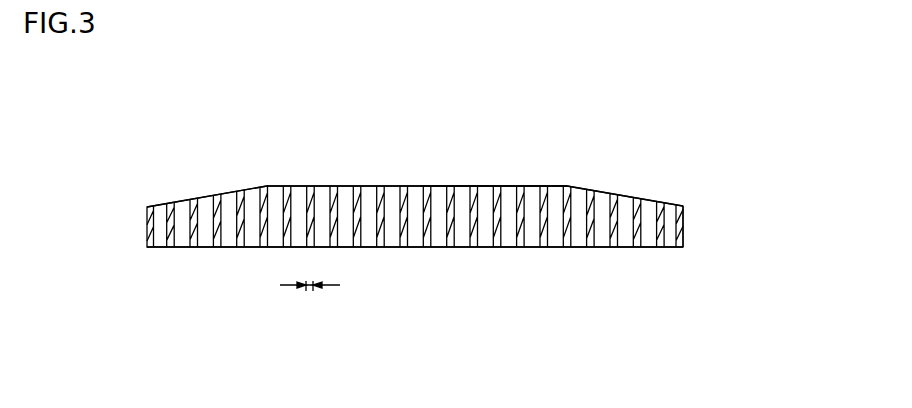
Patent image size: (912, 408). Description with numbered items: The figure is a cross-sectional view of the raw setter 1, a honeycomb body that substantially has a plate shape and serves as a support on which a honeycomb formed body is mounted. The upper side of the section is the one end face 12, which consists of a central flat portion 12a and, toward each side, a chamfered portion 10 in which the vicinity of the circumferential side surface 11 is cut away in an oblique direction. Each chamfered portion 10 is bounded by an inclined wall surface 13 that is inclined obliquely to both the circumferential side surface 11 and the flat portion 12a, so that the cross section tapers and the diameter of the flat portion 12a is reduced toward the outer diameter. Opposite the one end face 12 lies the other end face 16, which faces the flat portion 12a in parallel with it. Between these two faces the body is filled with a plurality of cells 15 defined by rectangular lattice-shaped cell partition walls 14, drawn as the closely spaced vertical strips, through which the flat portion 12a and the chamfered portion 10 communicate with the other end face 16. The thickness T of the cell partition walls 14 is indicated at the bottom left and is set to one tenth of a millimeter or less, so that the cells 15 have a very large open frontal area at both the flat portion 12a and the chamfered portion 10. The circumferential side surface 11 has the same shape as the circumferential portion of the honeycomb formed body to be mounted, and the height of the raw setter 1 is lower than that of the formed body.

The raw setter 1 is at (738, 110).
The chamfered portion 10 is at (642, 198).
The inclined wall surface 13 is at (625, 196).
The circumferential side surface 11 is at (683, 232).
The one end face 12 is at (483, 85).
The flat portion 12a is at (322, 186).
The cell partition walls 14 is at (547, 186).
The cells 15 is at (443, 186).
The other end face 16 is at (413, 247).
The thickness T is at (310, 295).